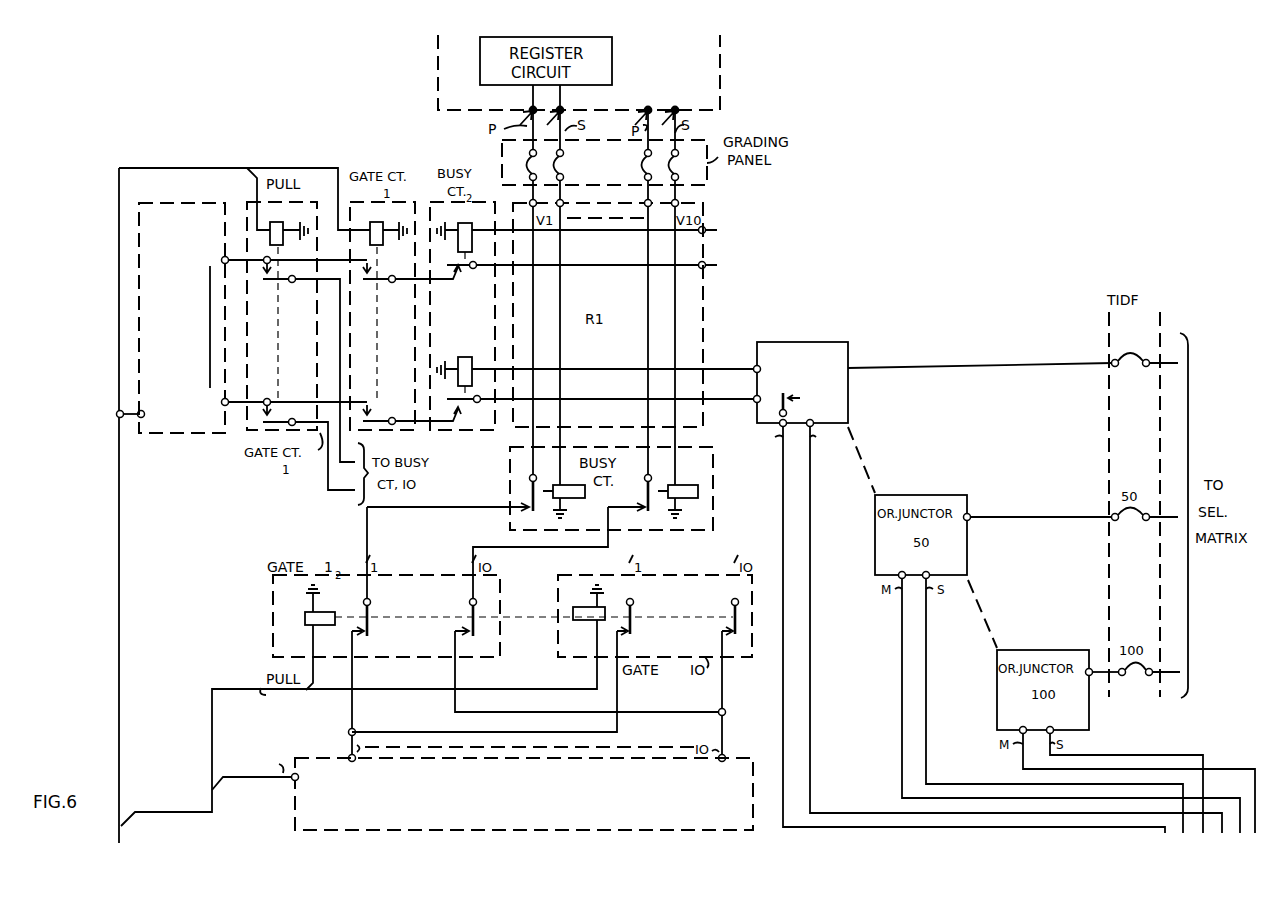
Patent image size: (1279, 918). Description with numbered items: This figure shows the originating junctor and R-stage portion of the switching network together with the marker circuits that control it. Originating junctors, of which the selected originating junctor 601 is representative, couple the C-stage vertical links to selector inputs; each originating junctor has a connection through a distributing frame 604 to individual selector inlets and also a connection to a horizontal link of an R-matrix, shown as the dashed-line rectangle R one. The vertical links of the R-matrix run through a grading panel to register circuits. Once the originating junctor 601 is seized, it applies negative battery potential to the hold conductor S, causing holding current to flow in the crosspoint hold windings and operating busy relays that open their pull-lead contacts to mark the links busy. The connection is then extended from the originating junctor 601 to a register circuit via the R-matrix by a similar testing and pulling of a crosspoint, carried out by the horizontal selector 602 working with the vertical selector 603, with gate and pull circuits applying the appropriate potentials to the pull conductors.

The originating junctor 601 is at (825, 328).
The horizontal selector 602 is at (184, 318).
The vertical selector 603 is at (482, 788).
The distributing frame 604 is at (1106, 351).